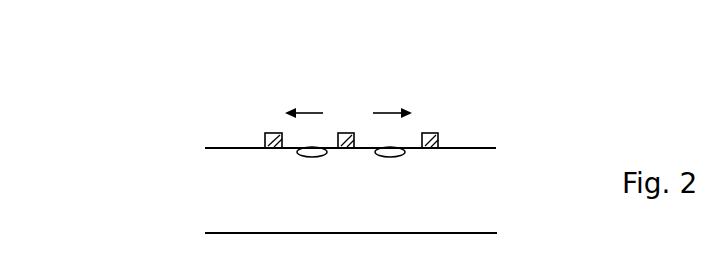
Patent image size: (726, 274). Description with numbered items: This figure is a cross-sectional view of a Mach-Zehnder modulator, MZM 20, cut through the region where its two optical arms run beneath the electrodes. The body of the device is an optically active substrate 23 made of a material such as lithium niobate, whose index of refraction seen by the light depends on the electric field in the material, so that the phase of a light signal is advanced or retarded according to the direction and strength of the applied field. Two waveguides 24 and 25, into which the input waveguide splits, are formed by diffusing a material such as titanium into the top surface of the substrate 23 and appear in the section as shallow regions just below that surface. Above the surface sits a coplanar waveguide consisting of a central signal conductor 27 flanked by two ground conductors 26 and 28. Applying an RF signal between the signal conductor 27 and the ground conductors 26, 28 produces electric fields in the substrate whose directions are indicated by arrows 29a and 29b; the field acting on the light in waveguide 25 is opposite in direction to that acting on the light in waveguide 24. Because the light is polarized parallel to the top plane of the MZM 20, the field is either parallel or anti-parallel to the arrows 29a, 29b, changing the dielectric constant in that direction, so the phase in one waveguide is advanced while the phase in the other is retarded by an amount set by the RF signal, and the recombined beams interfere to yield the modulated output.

The Mach-Zehnder Modulator 20 is at (120, 63).
The optically active substrate 23 is at (273, 215).
The waveguide 24 is at (385, 157).
The waveguide 25 is at (311, 157).
The ground conductor 26 is at (273, 133).
The signal conductor 27 is at (347, 133).
The ground conductor 28 is at (428, 133).
The arrow 29a is at (385, 113).
The arrow 29b is at (318, 112).